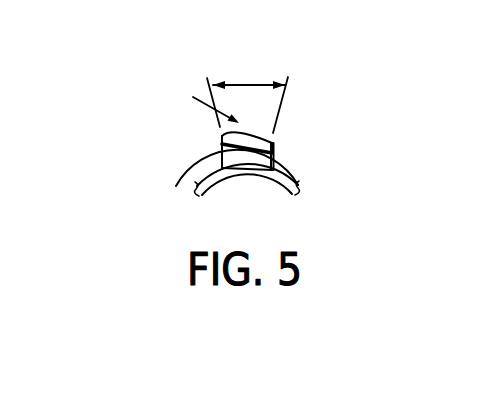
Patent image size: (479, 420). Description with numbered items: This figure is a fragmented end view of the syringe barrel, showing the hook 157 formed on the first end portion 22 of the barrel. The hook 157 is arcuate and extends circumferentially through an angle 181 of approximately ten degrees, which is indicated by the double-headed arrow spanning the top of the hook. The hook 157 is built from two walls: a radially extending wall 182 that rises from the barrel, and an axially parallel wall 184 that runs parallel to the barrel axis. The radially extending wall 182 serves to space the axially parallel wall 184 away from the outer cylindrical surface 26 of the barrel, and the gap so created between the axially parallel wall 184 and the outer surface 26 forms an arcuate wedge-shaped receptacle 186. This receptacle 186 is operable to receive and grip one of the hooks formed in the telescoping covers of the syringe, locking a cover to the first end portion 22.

The first end portion 22 is at (298, 177).
The outer cylindrical surface 26 is at (208, 177).
The hook 157 is at (196, 103).
The angle 181 is at (245, 84).
The radially extending wall 182 is at (272, 160).
The axially parallel wall 184 is at (250, 132).
The arcuate wedge-shaped receptacle 186 is at (222, 146).